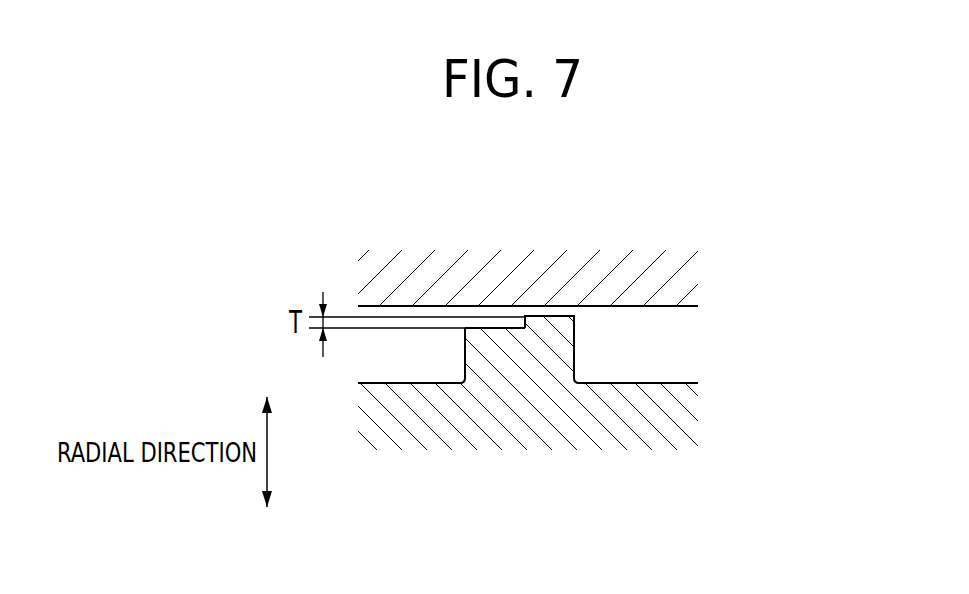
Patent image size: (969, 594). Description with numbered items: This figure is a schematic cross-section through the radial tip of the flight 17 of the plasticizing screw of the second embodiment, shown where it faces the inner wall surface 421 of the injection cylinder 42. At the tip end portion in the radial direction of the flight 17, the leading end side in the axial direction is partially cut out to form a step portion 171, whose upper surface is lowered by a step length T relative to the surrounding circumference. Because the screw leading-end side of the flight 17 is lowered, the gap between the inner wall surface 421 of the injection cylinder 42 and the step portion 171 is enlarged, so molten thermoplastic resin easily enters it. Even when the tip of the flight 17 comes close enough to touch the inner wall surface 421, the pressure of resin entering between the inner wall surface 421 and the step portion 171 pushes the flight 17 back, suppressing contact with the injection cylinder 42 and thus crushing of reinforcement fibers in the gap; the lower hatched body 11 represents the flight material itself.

The injection cylinder 42 is at (712, 270).
The inner wall surface 421 is at (670, 306).
The shaft / inner member 11 is at (670, 383).
The flight 17 is at (594, 351).
The step portion 171 is at (493, 328).